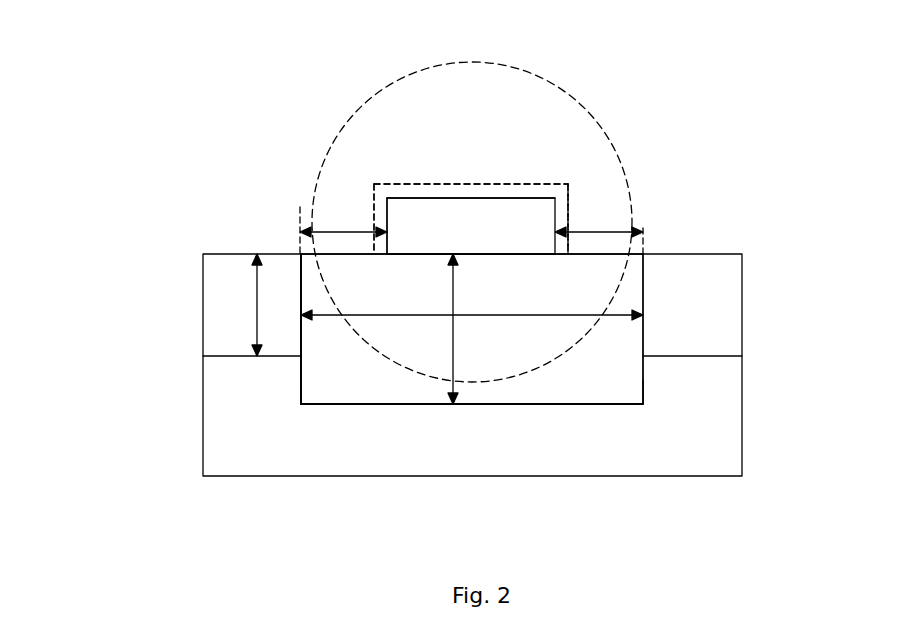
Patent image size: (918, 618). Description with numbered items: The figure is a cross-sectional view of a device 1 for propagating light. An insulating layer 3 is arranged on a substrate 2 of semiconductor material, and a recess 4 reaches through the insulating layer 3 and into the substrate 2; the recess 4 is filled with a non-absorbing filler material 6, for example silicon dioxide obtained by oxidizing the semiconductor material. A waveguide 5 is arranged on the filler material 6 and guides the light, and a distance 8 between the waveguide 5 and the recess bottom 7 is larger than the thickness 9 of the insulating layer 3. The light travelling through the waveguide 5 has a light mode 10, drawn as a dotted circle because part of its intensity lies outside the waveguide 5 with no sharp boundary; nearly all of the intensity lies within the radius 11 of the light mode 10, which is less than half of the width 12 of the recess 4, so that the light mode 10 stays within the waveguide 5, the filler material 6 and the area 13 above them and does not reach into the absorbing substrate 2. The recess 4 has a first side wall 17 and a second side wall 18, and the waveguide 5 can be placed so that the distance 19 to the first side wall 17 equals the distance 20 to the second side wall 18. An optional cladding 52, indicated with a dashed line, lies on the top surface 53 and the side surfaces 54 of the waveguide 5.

The device for propagating light 1 is at (664, 122).
The substrate 2 is at (717, 411).
The insulating layer 3 is at (713, 295).
The recess 4 is at (590, 383).
The filler material 6 is at (472, 329).
The waveguide 5 is at (512, 208).
The recess bottom 7 is at (508, 405).
The distance 8 is at (453, 363).
The thickness 9 is at (257, 288).
The light mode 10 is at (523, 70).
The radius 11 is at (382, 205).
The width 12 is at (573, 313).
The area 13 is at (322, 191).
The first side wall 17 is at (302, 380).
The second side wall 18 is at (643, 383).
The distance 19 is at (323, 232).
The distance 20 is at (617, 232).
The cladding 52 is at (568, 184).
The top surface 53 is at (437, 200).
The side surfaces 54 is at (387, 218).